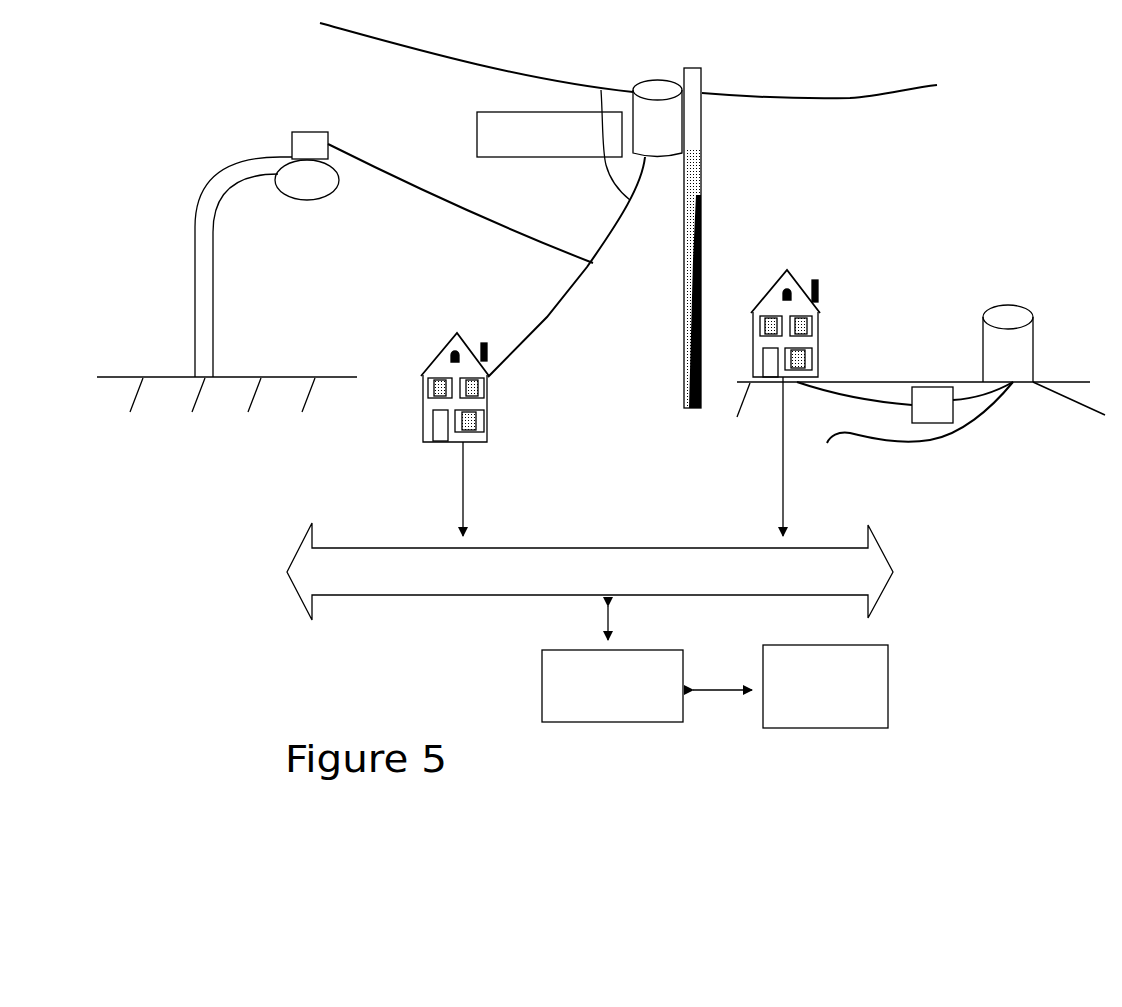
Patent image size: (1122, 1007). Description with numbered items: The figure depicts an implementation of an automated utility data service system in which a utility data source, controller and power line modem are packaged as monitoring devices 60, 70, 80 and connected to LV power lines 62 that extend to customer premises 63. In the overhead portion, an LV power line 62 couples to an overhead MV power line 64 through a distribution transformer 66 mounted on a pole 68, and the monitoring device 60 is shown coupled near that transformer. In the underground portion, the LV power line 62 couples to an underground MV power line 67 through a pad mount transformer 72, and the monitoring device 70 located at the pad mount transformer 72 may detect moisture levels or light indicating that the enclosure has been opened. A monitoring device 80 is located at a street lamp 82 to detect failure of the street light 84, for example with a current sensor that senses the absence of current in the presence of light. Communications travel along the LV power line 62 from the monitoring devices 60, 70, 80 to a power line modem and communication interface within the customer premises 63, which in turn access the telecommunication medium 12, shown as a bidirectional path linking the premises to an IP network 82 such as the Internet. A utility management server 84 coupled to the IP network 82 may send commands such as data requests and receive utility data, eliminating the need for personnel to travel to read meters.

The telecommunication medium 12 is at (585, 548).
The monitoring device 60 is at (477, 125).
The LV power line 62 is at (545, 323).
The customer premises 63 is at (488, 408).
The overhead MV power line 64 is at (773, 95).
The distribution transformer 66 is at (650, 78).
The underground MV power line 67 is at (1077, 403).
The pole 68 is at (701, 160).
The monitoring device 70 is at (932, 387).
The pad mount transformer 72 is at (980, 275).
The monitoring device 80 is at (313, 132).
The street lamp 82 is at (195, 227).
The street light 84 is at (310, 202).